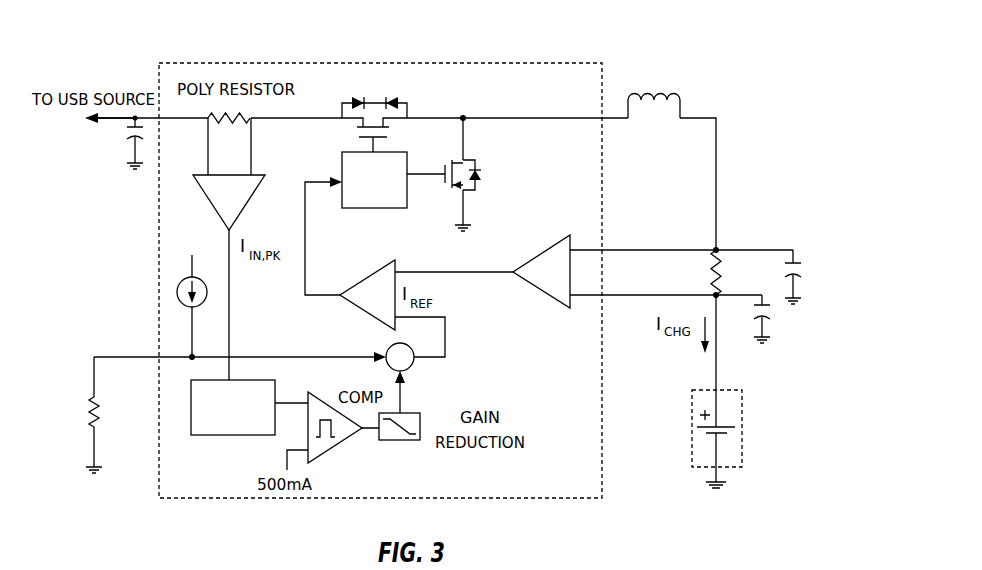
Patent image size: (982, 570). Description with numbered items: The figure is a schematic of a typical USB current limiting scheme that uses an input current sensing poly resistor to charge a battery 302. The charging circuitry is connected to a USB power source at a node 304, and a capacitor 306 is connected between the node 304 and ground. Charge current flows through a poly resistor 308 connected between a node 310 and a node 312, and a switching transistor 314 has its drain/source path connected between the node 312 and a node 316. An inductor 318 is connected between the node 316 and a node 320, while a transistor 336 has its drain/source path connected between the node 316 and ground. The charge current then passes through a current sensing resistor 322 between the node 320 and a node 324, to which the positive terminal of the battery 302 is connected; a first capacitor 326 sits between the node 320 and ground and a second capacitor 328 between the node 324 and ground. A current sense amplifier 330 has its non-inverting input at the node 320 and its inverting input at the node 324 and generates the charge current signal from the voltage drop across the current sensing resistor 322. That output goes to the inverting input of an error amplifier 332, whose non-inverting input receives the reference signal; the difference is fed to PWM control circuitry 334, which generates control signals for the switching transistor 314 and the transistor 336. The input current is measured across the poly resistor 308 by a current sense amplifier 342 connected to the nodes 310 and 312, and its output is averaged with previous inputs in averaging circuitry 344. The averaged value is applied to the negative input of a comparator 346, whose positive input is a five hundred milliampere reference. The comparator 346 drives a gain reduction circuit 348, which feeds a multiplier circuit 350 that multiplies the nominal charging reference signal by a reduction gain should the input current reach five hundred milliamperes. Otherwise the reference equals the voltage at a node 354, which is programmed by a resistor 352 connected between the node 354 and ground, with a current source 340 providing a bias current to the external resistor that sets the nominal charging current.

The battery 302 is at (742, 437).
The node 304 is at (117, 120).
The capacitor 306 is at (130, 138).
The poly resistor 308 is at (252, 116).
The node 310 is at (206, 121).
The node 312 is at (254, 121).
The switching transistor 314 is at (387, 128).
The node 316 is at (466, 115).
The inductor 318 is at (650, 94).
The node 320 is at (722, 246).
The current sensing resistor 322 is at (710, 280).
The node 324 is at (716, 348).
The first capacitor 326 is at (806, 270).
The second capacitor 328 is at (770, 310).
The current sense amplifier 330 is at (535, 258).
The error amplifier 332 is at (357, 302).
The PWM control circuitry 334 is at (371, 210).
The transistor 336 is at (470, 157).
The current source 340 is at (178, 292).
The current sense amplifier 342 is at (219, 212).
The averaging circuitry 344 is at (246, 437).
The comparator 346 is at (332, 403).
The gain reduction circuit 348 is at (410, 442).
The multiplier circuit 350 is at (412, 366).
The resistor R_IREF 352 is at (88, 420).
The node 354 is at (190, 356).